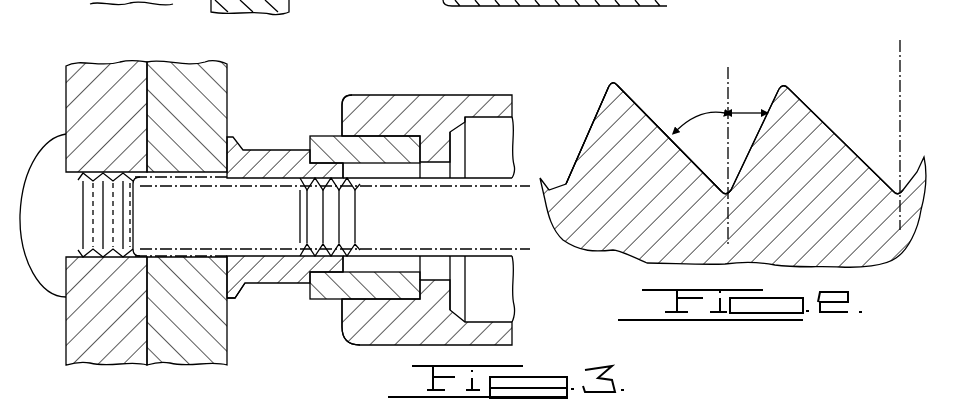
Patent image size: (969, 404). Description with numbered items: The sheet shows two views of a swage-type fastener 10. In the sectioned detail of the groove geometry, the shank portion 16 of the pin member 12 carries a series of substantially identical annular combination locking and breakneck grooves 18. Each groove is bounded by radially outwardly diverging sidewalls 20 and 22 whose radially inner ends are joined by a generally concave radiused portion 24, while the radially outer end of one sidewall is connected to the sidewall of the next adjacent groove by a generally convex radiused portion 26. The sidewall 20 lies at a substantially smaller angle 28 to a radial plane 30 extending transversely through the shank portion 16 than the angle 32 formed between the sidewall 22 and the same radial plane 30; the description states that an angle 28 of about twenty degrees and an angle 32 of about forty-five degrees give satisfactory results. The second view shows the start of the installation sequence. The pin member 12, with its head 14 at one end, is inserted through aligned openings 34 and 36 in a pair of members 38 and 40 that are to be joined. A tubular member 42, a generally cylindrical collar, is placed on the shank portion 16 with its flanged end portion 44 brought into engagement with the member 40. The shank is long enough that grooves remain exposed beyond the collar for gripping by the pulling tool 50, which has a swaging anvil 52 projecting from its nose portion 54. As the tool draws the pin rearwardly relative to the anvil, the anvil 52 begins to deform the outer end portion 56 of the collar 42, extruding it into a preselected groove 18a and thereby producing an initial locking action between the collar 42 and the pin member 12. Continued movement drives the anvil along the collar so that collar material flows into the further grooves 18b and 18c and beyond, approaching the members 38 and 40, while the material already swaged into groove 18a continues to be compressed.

In FIG. 3, the fastener 10 is at (243, 103).
In FIG. 3, the pin member 12 is at (33, 283).
In FIG. 3, the head 14 is at (40, 155).
In FIG. 3, the shank portion 16 is at (247, 187).
In FIG. 2, the shank portion 16 is at (640, 250).
In FIG. 2, the combination locking and breakneck grooves 18 is at (713, 163).
In FIG. 3, the preselected combination groove 18a is at (346, 266).
In FIG. 3, the combination groove 18b is at (327, 258).
In FIG. 3, the combination groove 18c is at (308, 258).
In FIG. 2, the sidewall 20 is at (592, 118).
In FIG. 2, the sidewall 22 is at (656, 102).
In FIG. 2, the concave radiused portion 24 is at (722, 193).
In FIG. 2, the convex radiused portion 26 is at (613, 82).
In FIG. 2, the angle 28 is at (742, 118).
In FIG. 2, the radial plane 30 is at (733, 75).
In FIG. 2, the angle 32 is at (705, 118).
In FIG. 3, the opening 34 is at (93, 257).
In FIG. 3, the opening 36 is at (188, 260).
In FIG. 3, the member 38 is at (80, 88).
In FIG. 3, the member 40 is at (218, 72).
In FIG. 3, the tubular member 42 is at (267, 283).
In FIG. 3, the flanged end portion 44 is at (227, 298).
In FIG. 3, the pulling tool 50 is at (456, 92).
In FIG. 3, the swaging anvil 52 is at (320, 134).
In FIG. 3, the nose portion 54 is at (333, 162).
In FIG. 3, the outer end portion 56 is at (340, 115).